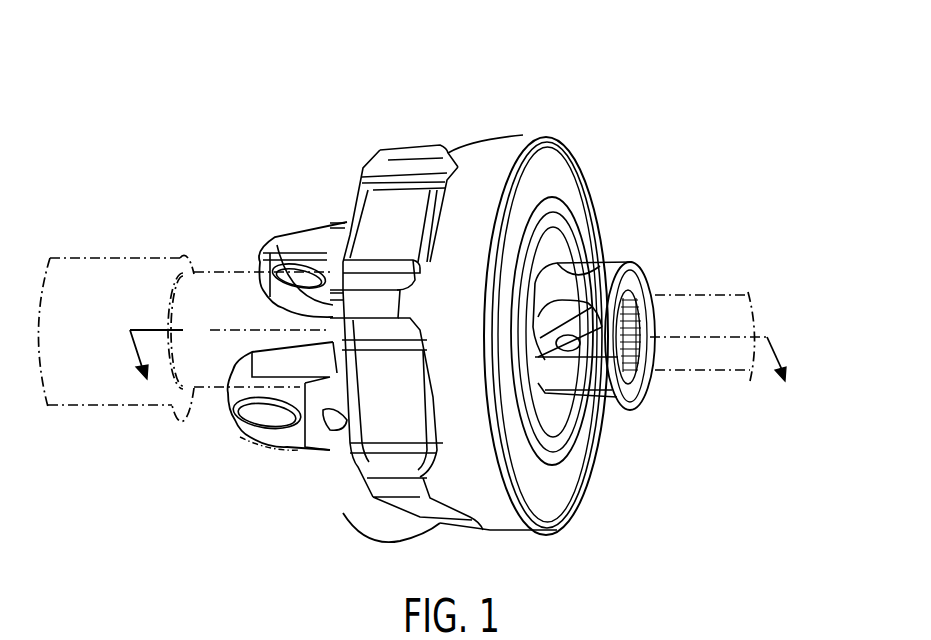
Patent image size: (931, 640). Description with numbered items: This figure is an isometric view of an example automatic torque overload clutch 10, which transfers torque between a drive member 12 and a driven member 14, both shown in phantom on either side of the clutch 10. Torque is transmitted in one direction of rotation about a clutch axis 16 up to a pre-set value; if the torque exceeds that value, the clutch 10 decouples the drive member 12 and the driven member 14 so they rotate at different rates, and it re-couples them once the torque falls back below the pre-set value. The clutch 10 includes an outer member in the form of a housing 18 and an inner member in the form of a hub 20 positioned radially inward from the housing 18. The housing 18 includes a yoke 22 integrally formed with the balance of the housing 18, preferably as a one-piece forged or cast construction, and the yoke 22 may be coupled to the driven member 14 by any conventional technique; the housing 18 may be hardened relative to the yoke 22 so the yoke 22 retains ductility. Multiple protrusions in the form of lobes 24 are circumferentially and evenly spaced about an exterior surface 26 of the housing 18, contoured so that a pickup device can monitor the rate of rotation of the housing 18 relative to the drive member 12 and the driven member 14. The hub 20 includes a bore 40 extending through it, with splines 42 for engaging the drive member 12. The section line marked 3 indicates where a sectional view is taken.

The torque overload clutch 10 is at (544, 94).
The drive member 12 is at (728, 296).
The driven member 14 is at (50, 258).
The clutch axis 16 is at (230, 330).
The housing 18 is at (473, 138).
The hub 20 is at (640, 262).
The yoke 22 is at (277, 250).
The lobes 24 is at (400, 148).
The exterior surface 26 is at (405, 230).
The bore 40 is at (630, 317).
The splines 42 is at (640, 357).
The section line 3 is at (461, 359).